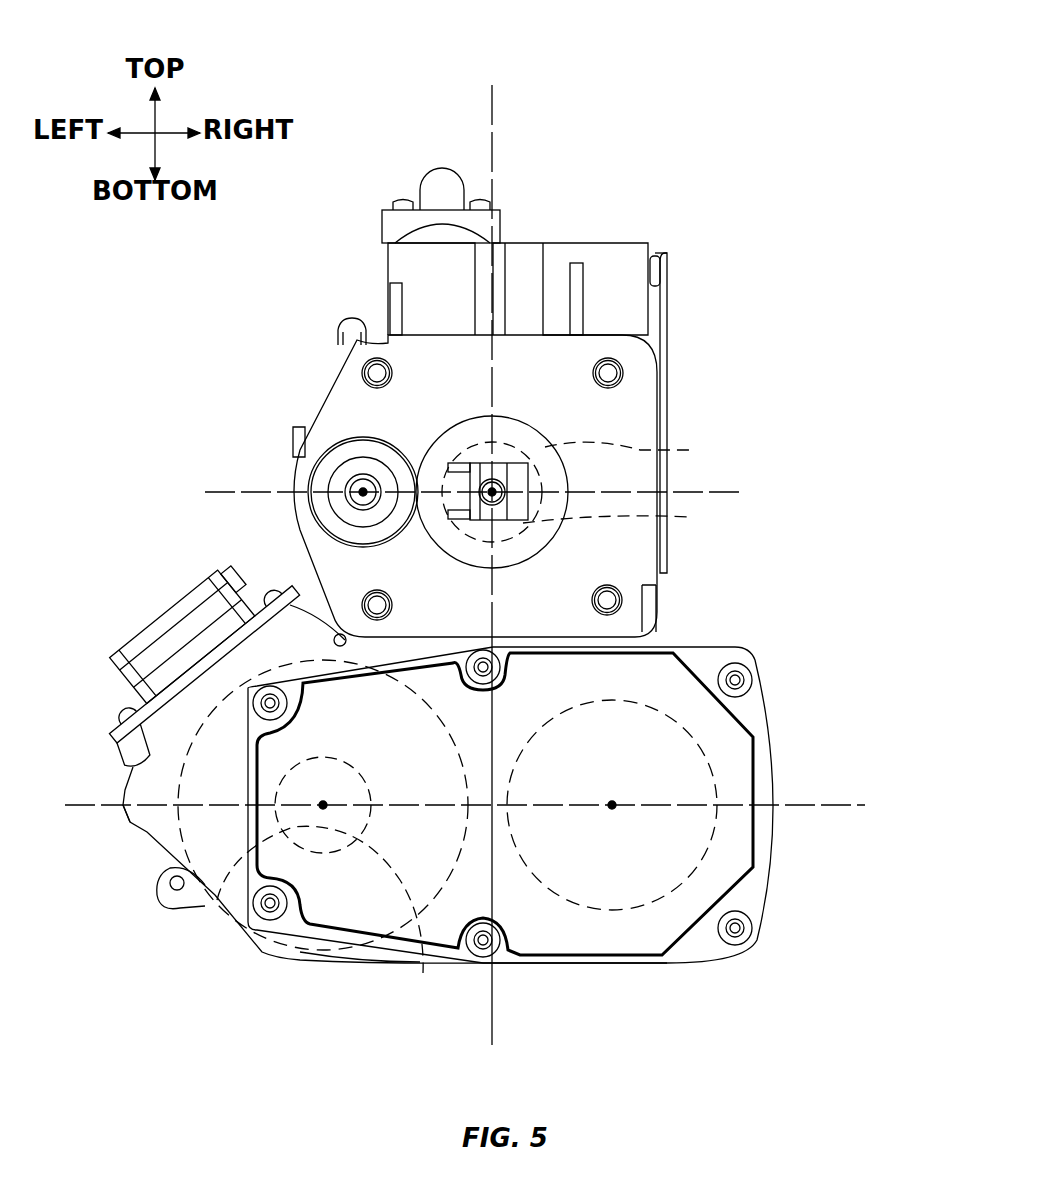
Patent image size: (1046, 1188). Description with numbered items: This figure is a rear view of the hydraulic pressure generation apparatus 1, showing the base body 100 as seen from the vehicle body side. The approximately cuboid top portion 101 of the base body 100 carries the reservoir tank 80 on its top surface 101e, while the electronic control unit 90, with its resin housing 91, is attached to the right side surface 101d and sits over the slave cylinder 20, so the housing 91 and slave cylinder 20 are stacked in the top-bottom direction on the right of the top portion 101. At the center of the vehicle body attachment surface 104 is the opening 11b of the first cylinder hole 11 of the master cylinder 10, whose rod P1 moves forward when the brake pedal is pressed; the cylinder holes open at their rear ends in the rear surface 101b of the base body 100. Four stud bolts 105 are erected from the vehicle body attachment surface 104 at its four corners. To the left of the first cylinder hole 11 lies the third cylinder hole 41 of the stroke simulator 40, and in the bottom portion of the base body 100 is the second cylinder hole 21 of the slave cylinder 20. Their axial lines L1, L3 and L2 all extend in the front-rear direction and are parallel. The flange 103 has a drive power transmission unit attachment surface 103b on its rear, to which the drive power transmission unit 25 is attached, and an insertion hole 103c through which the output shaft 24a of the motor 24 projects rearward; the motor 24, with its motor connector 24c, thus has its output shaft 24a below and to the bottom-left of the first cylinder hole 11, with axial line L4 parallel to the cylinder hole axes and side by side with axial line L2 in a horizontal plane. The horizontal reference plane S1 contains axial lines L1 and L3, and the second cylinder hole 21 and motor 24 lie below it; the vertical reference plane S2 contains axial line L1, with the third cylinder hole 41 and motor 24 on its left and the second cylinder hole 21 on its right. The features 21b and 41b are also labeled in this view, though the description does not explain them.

The hydraulic pressure generation apparatus 1 is at (440, 108).
The master cylinder 10 is at (660, 447).
The first cylinder hole 11 is at (611, 492).
The opening of the first cylinder hole 11b is at (660, 515).
The slave cylinder 20 is at (718, 840).
The second cylinder hole 21 is at (572, 804).
The cover flange 21b is at (757, 748).
The motor 24 is at (268, 955).
The output shaft 24a is at (197, 920).
The motor connector 24c is at (178, 615).
The drive power transmission unit 25 is at (578, 966).
The stroke simulator 40 is at (306, 516).
The third cylinder hole 41 is at (290, 482).
The bearing ring 41b is at (313, 473).
The reservoir tank 80 is at (437, 178).
The electronic control unit 90 is at (672, 322).
The housing 91 is at (655, 250).
The base body 100 is at (540, 235).
The top portion 101 is at (427, 277).
The rear surface 101b is at (660, 266).
The right side surface 101d is at (547, 267).
The top surface 101e is at (510, 240).
The flange 103 is at (123, 790).
The drive power transmission unit attachment surface 103b is at (135, 825).
The insertion hole 103c is at (417, 950).
The vehicle body attachment surface 104 is at (625, 548).
The stud bolts 105 is at (375, 373).
The axial line of the first cylinder hole L1 is at (495, 497).
The axial line of the second cylinder hole L2 is at (612, 810).
The axial line of the third cylinder hole L3 is at (363, 490).
The axial line of the output shaft L4 is at (323, 810).
The rod P1 is at (490, 486).
The horizontal reference plane S1 is at (748, 492).
The vertical reference plane S2 is at (505, 97).